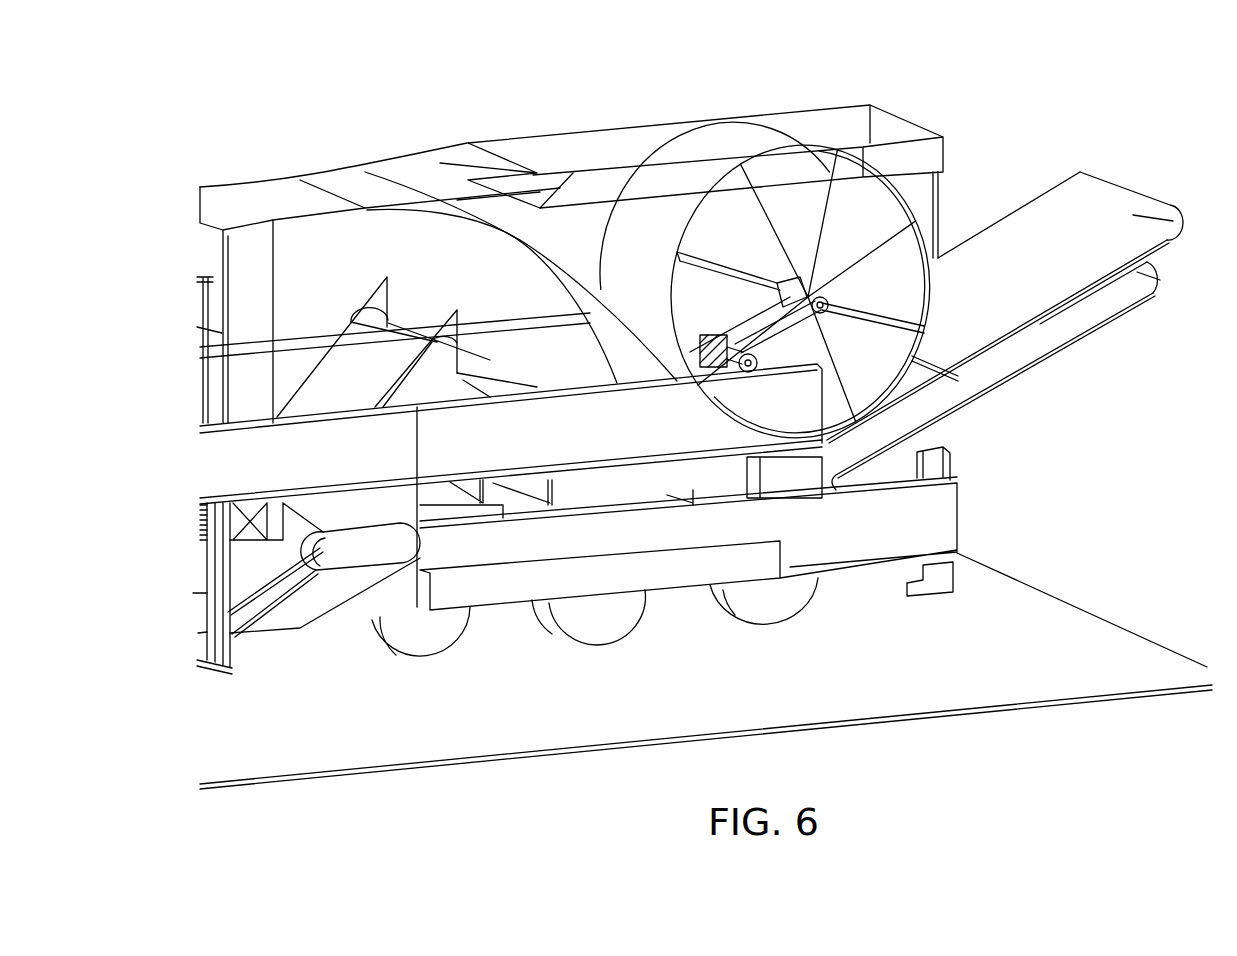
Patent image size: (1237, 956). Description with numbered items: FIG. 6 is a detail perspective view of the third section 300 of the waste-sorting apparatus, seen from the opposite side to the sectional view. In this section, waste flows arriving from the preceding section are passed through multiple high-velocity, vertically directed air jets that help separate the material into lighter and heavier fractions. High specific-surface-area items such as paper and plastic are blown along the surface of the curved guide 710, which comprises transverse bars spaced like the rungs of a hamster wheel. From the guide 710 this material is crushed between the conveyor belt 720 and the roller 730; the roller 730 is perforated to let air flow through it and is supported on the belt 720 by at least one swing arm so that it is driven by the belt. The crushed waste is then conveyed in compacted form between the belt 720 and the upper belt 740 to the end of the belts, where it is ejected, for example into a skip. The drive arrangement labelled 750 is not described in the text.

The third section 300 is at (1085, 124).
The curved guide 710 is at (370, 175).
The conveyor belt 720 is at (1071, 350).
The roller 730 is at (745, 145).
The upper belt 740 is at (1001, 248).
The drive motor 750 is at (818, 340).